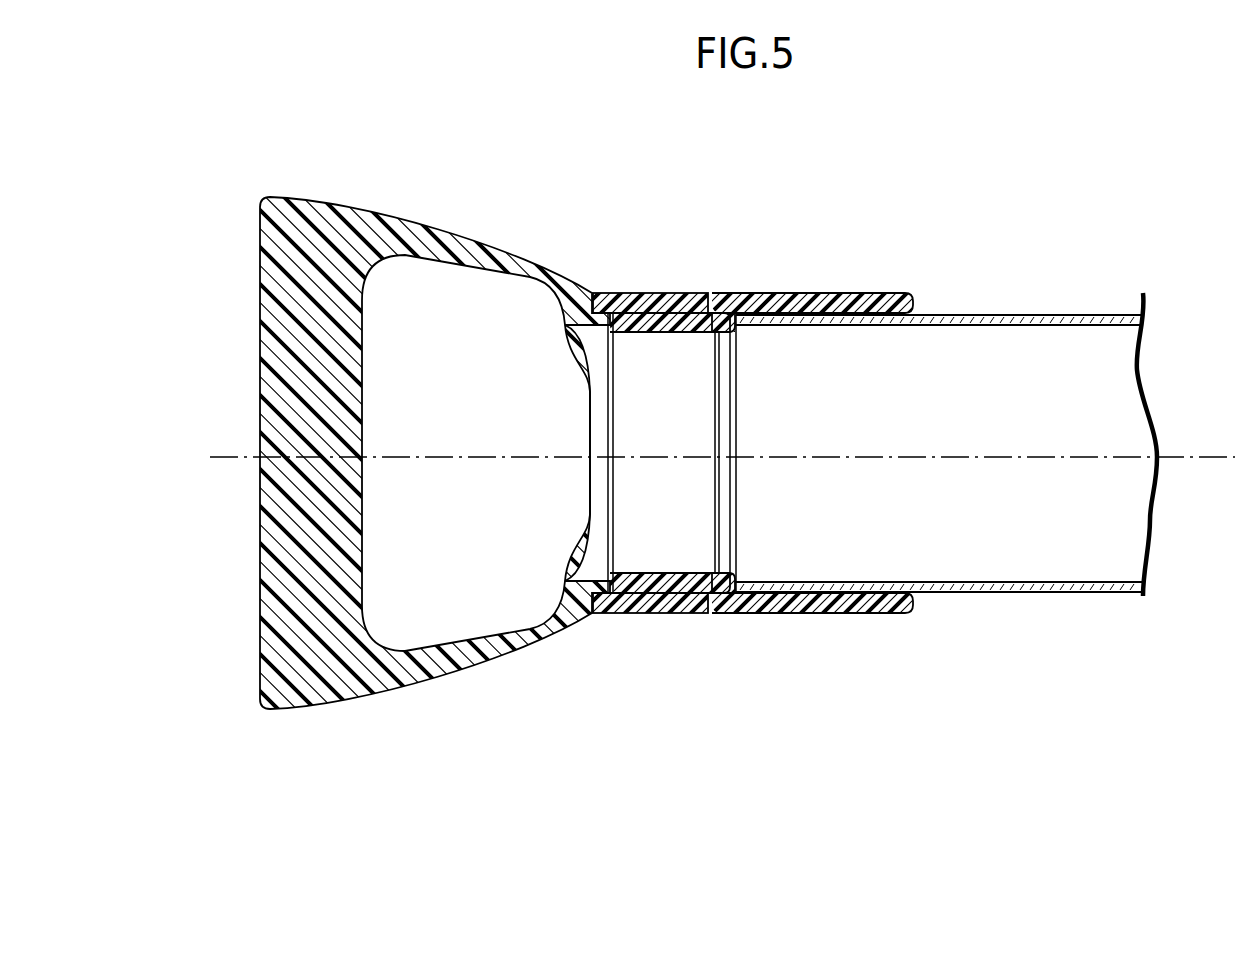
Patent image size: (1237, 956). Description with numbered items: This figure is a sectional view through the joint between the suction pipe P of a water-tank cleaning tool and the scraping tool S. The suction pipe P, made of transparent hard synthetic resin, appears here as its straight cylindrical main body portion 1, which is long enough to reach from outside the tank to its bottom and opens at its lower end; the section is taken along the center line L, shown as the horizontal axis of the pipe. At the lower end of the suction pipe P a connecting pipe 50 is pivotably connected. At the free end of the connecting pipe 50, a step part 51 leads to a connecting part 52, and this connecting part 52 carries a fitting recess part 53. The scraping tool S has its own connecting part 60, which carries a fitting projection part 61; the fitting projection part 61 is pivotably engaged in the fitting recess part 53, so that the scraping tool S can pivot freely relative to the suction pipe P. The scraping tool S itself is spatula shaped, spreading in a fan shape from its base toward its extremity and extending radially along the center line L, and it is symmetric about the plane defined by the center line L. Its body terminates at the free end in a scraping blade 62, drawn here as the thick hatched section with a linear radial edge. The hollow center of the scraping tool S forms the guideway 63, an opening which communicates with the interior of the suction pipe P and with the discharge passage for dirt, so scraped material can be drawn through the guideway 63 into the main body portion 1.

The main body portion 1 is at (990, 590).
The connecting pipe 50 is at (810, 303).
The step part 51 is at (728, 333).
The connecting part 52 is at (690, 333).
The fitting recess part 53 is at (668, 322).
The connecting part 60 is at (678, 303).
The fitting projection part 61 is at (660, 318).
The scraping blade 62 is at (260, 410).
The guideway 63 is at (489, 420).
The scraping tool S is at (394, 478).
The suction pipe P is at (946, 430).
The center line L is at (1180, 457).